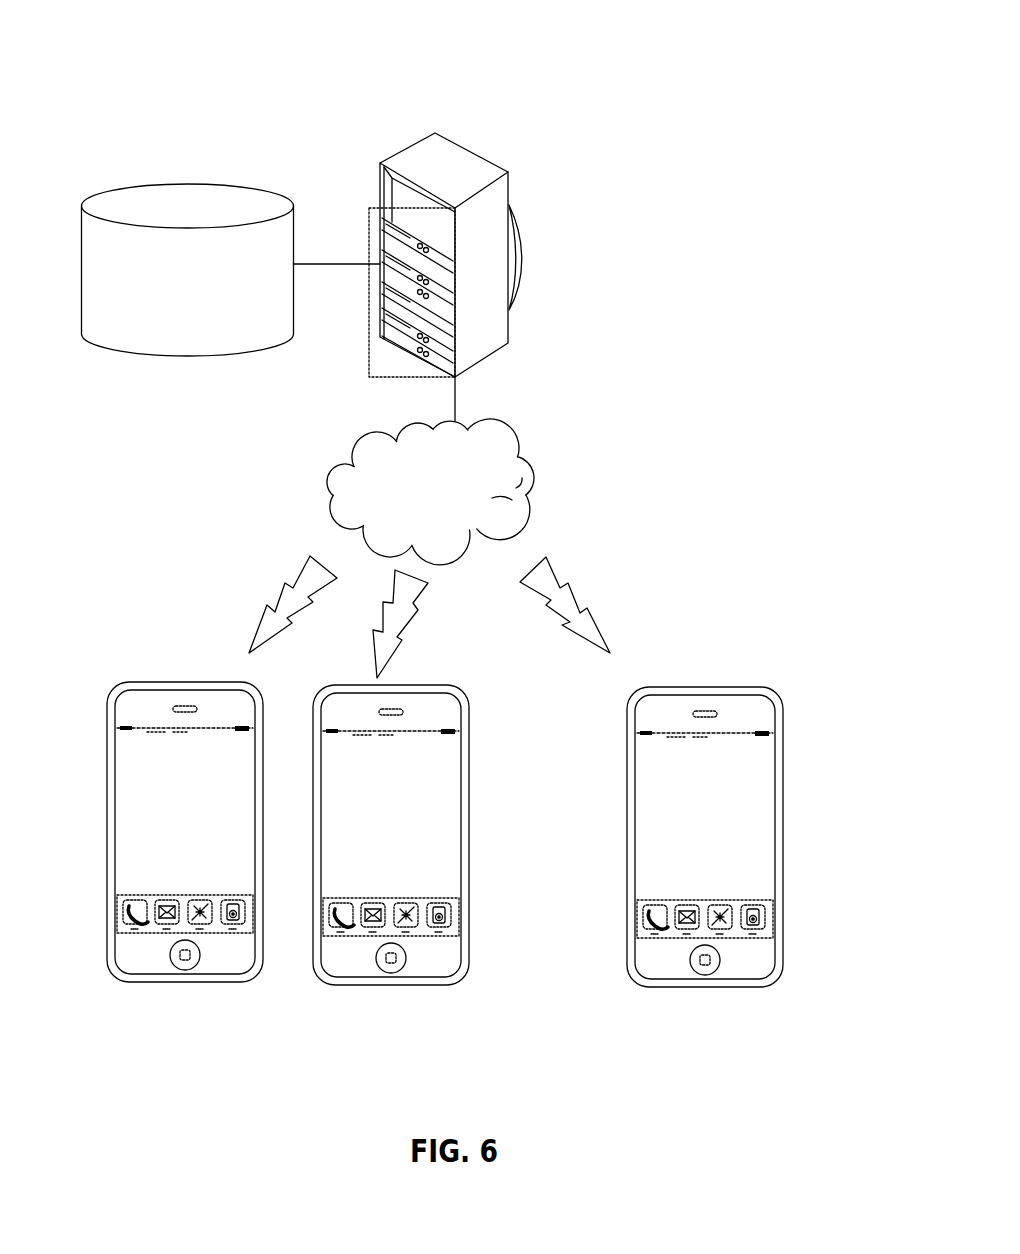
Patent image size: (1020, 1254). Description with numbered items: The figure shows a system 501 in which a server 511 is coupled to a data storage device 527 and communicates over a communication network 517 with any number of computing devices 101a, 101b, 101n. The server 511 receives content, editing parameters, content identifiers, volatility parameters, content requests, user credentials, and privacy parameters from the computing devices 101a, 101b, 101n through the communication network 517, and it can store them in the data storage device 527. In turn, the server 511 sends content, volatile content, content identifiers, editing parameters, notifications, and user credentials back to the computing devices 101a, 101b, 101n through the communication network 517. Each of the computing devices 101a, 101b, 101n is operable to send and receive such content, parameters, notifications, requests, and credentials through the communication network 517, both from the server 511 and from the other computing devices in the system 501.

The system 501 is at (632, 62).
The data storage device 527 is at (172, 182).
The server 511 is at (467, 150).
The communication network 517 is at (535, 488).
The computing device 101a is at (148, 982).
The computing device 101b is at (353, 985).
The computing device 101n is at (633, 982).